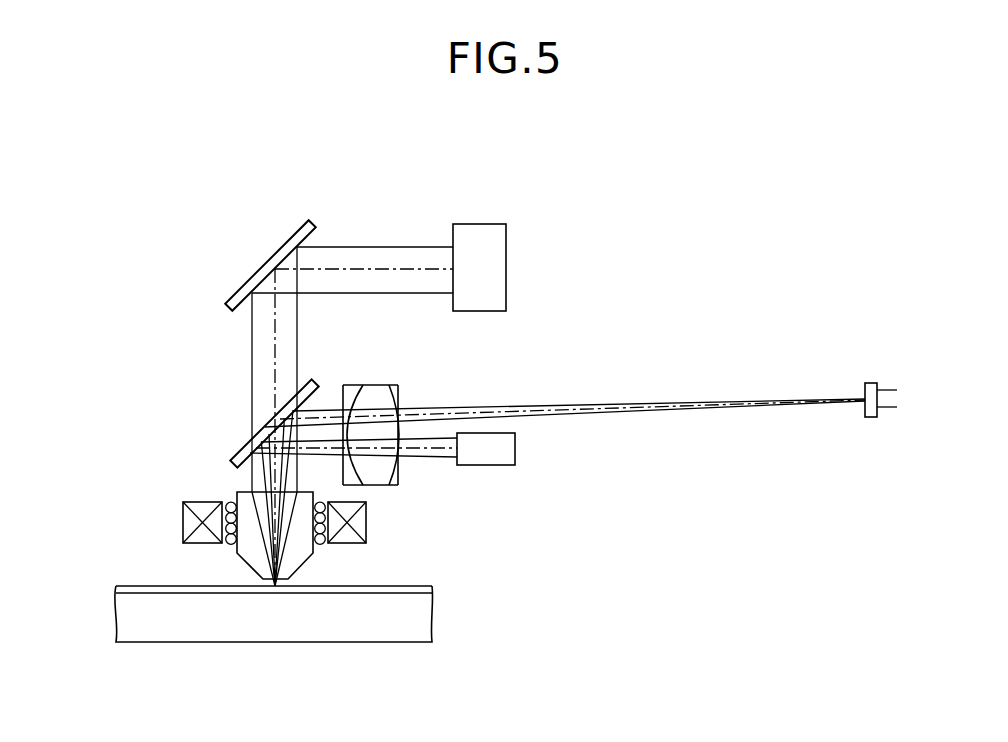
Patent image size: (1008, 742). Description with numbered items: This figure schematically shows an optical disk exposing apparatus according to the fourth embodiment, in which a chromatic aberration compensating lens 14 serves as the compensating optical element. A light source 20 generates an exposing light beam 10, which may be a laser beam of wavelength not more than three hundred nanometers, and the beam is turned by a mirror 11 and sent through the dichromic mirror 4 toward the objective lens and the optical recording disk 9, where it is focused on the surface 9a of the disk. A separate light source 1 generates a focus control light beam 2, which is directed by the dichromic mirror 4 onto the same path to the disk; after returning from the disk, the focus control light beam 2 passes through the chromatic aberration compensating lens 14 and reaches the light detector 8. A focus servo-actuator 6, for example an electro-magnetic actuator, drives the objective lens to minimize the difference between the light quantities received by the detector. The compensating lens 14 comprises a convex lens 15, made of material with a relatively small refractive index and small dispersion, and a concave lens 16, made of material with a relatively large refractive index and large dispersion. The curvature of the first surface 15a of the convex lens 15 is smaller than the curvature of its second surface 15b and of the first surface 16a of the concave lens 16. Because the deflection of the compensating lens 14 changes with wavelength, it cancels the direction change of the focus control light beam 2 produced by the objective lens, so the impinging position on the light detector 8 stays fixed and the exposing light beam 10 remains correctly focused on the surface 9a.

The light source 1 is at (490, 466).
The focus control light beam 2 is at (424, 456).
The dichromic mirror 4 is at (245, 445).
The focus servo-actuator 6 is at (229, 502).
The light detector 8 is at (870, 383).
The optical recording disk 9 is at (310, 608).
The surface of the optical recording disk 9a is at (432, 587).
The exposing light beam 10 is at (365, 253).
The mirror 11 is at (293, 232).
The chromatic aberration compensating lens 14 is at (408, 441).
The convex lens 15 is at (422, 439).
The first surface of the convex lens 15a is at (399, 393).
The second surface of the convex lens 15b is at (362, 474).
The concave lens 16 is at (369, 452).
The first surface of the concave lens 16a is at (358, 487).
The light source 20 is at (478, 230).